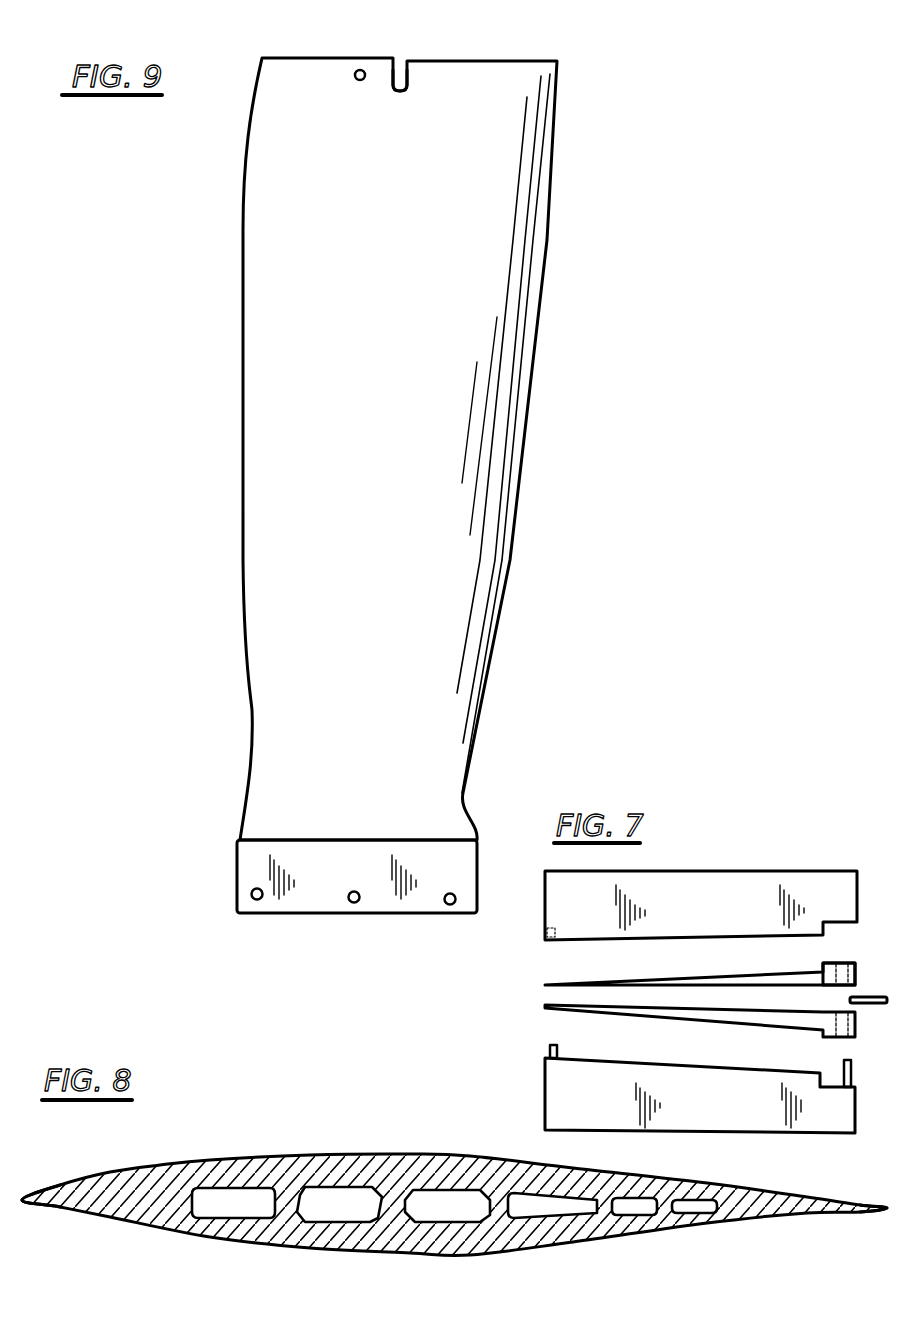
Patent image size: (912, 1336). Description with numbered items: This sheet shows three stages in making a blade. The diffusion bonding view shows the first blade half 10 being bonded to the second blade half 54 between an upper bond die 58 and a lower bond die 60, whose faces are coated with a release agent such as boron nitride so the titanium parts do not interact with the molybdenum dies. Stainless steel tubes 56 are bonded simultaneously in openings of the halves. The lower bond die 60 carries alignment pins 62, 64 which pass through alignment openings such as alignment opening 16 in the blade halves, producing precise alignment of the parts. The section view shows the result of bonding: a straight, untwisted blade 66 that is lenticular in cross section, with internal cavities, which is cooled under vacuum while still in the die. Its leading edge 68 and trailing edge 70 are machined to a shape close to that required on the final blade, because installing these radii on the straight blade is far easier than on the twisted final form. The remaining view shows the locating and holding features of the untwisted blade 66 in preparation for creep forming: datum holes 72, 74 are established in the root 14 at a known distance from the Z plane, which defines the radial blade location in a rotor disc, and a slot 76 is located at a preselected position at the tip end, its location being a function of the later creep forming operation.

In FIG. 7, the first blade half 10 is at (768, 974).
In FIG. 9, the root 14 is at (240, 868).
In FIG. 9, the alignment opening 16 is at (353, 904).
In FIG. 7, the alignment opening 16 is at (846, 962).
In FIG. 7, the second blade half 54 is at (764, 1028).
In FIG. 7, the stainless steel tube 56 is at (880, 1004).
In FIG. 7, the upper bond die 58 is at (718, 897).
In FIG. 7, the lower bond die 60 is at (562, 1096).
In FIG. 7, the alignment pin 62 is at (843, 1070).
In FIG. 7, the alignment pin 64 is at (550, 1049).
In FIG. 9, the untwisted blade 66 is at (548, 290).
In FIG. 8, the untwisted blade 66 is at (375, 1155).
In FIG. 8, the leading edge 68 is at (28, 1193).
In FIG. 8, the trailing edge 70 is at (886, 1211).
In FIG. 9, the datum hole 72 is at (255, 902).
In FIG. 9, the datum hole 74 is at (448, 905).
In FIG. 9, the slot 76 is at (407, 78).